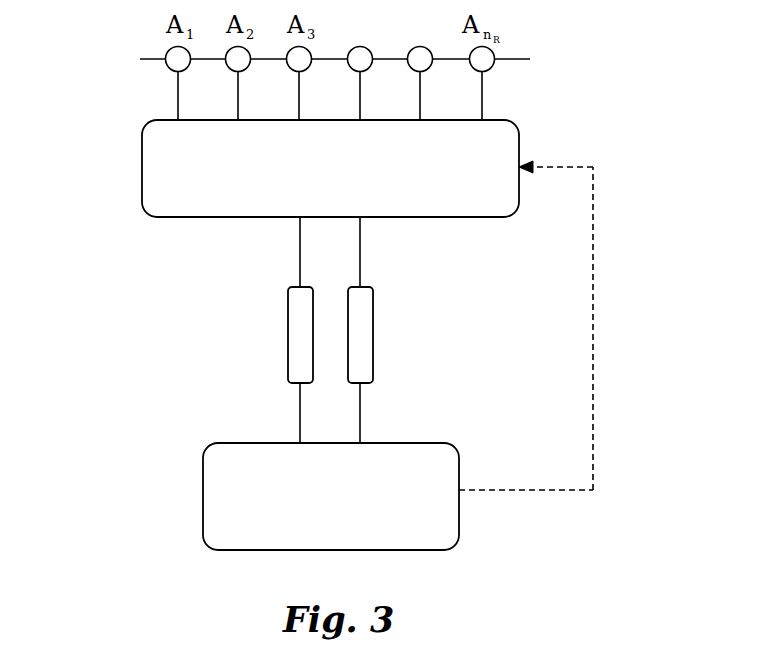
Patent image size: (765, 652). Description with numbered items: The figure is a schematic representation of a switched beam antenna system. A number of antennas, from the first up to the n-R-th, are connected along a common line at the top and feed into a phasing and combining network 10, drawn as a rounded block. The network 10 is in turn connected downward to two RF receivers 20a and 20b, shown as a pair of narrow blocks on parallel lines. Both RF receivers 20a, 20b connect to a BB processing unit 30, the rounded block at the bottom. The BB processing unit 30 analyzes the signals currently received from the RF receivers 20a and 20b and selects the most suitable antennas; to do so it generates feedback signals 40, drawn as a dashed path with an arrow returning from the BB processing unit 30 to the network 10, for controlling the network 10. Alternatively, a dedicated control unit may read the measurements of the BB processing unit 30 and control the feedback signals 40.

The phasing and combining network 10 is at (142, 172).
The RF receiver 20a is at (288, 346).
The RF receiver 20b is at (373, 340).
The BB processing unit 30 is at (203, 508).
The feedback signals 40 is at (593, 304).